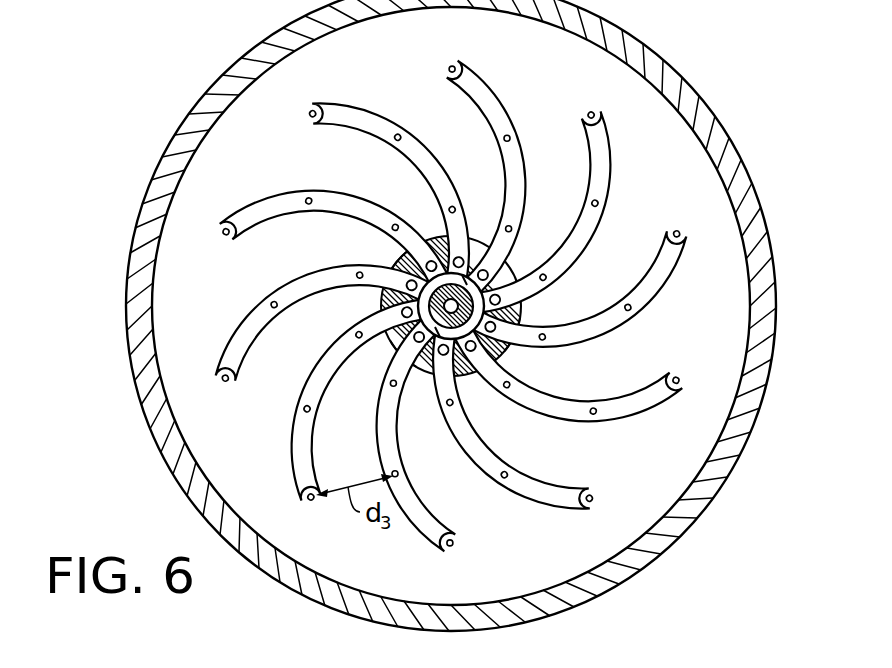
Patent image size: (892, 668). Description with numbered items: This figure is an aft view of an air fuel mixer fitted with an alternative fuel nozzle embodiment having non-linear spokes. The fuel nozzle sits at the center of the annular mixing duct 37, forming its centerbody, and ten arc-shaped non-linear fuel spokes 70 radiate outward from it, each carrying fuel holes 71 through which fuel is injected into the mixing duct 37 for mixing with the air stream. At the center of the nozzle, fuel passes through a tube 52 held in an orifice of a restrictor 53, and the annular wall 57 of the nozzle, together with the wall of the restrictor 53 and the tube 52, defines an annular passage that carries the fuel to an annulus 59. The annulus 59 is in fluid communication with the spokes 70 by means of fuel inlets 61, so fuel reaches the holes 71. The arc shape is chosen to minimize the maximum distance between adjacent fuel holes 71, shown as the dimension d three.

The annular mixing duct 37 is at (737, 447).
The tube 52 is at (393, 349).
The restrictor 53 is at (395, 305).
The annular wall 57 is at (522, 311).
The annulus 59 is at (403, 250).
The fuel inlets 61 is at (510, 332).
The non-linear fuel spokes 70 is at (601, 163).
The fuel holes 71 is at (674, 255).